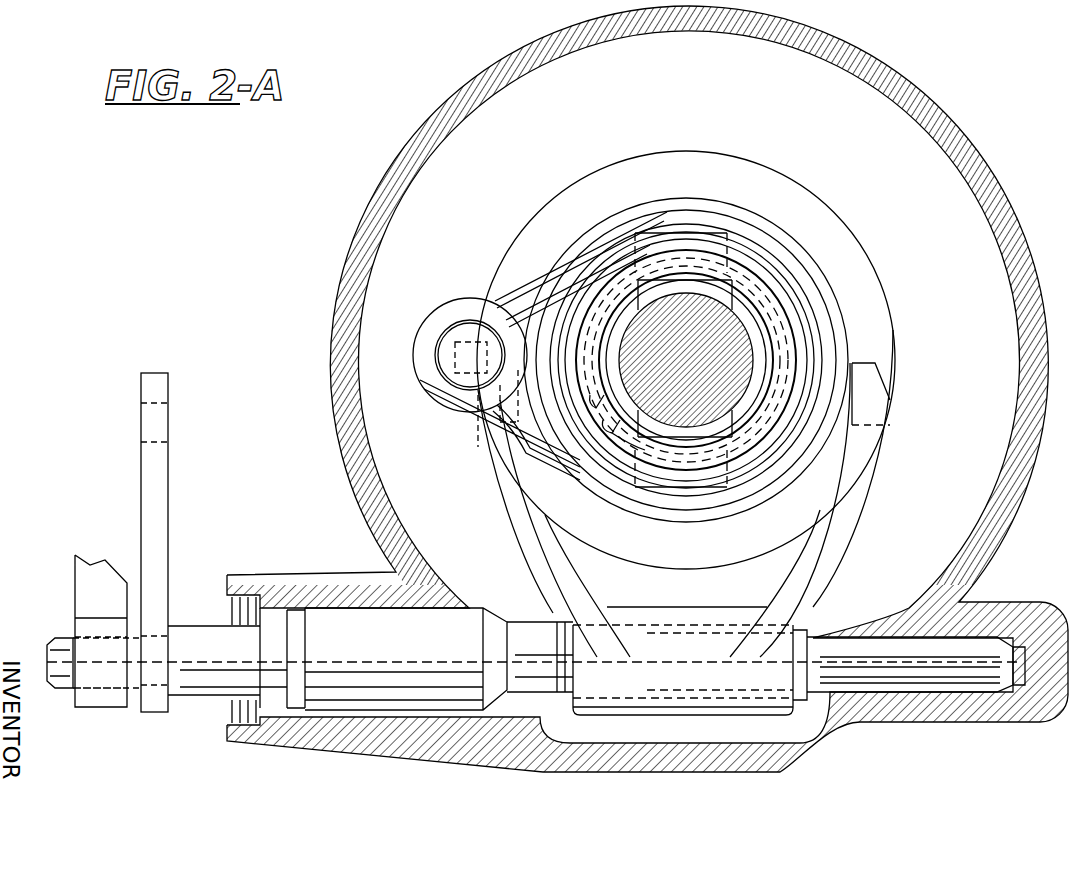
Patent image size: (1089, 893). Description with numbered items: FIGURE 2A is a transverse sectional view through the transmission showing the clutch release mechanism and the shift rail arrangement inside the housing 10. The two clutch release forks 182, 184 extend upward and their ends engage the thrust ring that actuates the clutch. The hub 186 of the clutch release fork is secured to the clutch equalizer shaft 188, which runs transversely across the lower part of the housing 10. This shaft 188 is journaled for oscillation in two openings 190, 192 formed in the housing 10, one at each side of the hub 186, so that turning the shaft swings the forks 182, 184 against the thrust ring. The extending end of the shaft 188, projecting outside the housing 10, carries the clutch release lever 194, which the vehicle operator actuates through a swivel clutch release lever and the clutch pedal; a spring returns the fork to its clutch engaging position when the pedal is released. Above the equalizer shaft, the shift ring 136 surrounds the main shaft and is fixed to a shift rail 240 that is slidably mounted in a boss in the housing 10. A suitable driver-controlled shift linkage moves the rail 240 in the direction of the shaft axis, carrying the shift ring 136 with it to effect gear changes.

The housing 10 is at (1027, 449).
The shift ring 136 is at (590, 465).
The clutch release fork 182 is at (877, 477).
The clutch release fork 184 is at (480, 457).
The hub 186 is at (700, 703).
The clutch equalizer shaft 188 is at (540, 675).
The opening 190 is at (933, 690).
The opening 192 is at (357, 710).
The clutch release lever 194 is at (157, 493).
The shift rail 240 is at (445, 345).